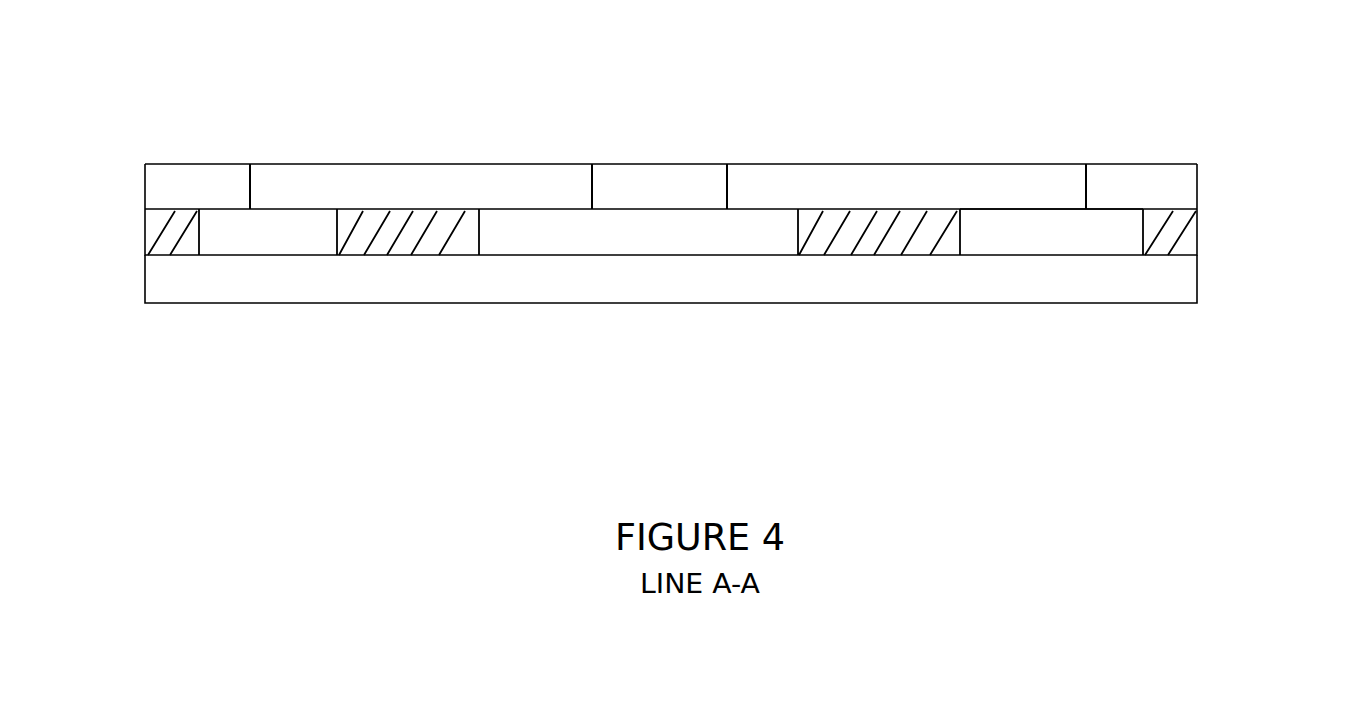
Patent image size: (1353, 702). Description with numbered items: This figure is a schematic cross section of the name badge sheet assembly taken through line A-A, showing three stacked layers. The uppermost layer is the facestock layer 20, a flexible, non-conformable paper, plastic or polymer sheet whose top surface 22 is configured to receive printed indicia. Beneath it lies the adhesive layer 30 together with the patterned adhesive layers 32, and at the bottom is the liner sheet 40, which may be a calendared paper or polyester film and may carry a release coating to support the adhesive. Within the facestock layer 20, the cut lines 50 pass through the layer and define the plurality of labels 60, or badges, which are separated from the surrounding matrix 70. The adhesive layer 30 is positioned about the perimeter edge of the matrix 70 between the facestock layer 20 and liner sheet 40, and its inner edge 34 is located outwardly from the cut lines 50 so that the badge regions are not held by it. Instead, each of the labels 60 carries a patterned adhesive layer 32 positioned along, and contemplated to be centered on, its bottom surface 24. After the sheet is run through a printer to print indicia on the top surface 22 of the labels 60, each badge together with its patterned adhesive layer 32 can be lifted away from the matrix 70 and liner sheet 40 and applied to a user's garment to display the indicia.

The facestock layer 20 is at (1182, 176).
The top surface 22 is at (1036, 165).
The bottom surface 24 is at (987, 211).
The adhesive layer 30 is at (1177, 228).
The patterned adhesive layer 32 is at (408, 235).
The inner edge 34 is at (200, 240).
The liner sheet 40 is at (1175, 280).
The cut lines 50 is at (252, 178).
The labels 60 is at (526, 180).
The matrix 70 is at (197, 180).